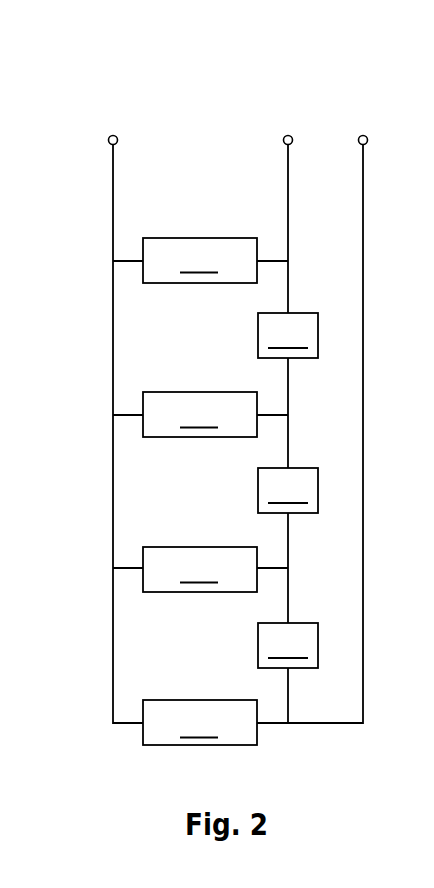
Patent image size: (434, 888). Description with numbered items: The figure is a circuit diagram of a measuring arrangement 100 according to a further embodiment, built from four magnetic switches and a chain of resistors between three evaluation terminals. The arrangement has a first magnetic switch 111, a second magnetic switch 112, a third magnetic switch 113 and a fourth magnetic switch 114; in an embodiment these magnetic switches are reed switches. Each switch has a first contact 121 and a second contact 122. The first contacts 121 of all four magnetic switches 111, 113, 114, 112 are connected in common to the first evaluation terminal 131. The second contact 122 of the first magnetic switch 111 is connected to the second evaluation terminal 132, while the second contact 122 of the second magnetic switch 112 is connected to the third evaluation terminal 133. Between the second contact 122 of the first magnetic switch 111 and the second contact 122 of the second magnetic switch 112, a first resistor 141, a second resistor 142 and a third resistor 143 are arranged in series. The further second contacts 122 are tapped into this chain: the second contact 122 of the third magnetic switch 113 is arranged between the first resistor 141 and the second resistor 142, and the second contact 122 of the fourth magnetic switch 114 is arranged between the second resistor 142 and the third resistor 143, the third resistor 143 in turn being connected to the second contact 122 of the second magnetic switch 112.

The measuring arrangement 100 is at (133, 45).
The first magnetic switch 111 is at (200, 260).
The second magnetic switch 112 is at (200, 722).
The third magnetic switch 113 is at (200, 414).
The fourth magnetic switch 114 is at (200, 569).
The first contact 121 is at (143, 249).
The second contact 122 is at (257, 249).
The first evaluation terminal 131 is at (113, 136).
The second evaluation terminal 132 is at (288, 136).
The third evaluation terminal 133 is at (363, 136).
The first resistor 141 is at (288, 335).
The second resistor 142 is at (288, 490).
The third resistor 143 is at (288, 645).